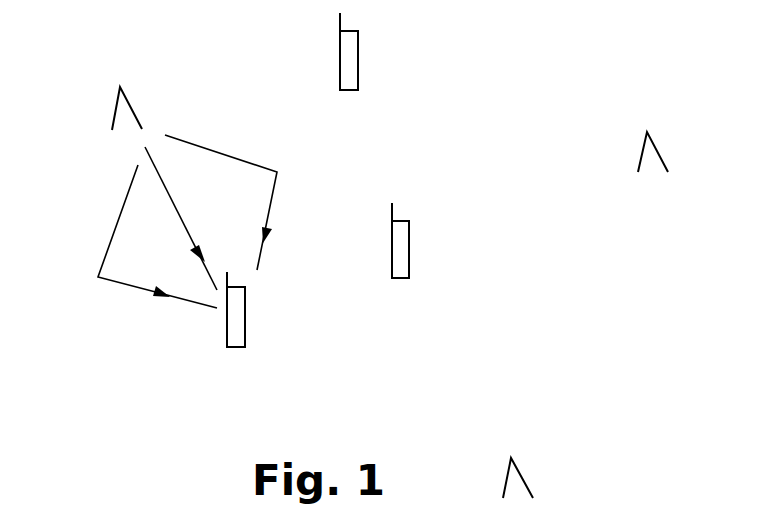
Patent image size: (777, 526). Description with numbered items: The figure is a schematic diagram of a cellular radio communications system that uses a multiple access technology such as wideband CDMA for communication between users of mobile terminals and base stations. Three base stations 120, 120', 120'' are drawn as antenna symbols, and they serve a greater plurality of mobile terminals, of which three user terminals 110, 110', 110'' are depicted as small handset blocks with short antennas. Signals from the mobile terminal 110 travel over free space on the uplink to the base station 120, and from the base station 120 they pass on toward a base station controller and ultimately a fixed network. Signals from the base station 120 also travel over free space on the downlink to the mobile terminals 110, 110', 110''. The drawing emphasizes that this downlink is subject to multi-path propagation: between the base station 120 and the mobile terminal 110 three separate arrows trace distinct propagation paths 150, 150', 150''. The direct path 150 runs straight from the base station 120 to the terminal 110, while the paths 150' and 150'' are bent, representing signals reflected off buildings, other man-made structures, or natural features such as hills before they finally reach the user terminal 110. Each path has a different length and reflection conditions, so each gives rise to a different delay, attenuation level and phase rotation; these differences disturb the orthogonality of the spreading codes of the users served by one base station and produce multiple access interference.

The user terminal 110 is at (282, 309).
The mobile terminal 110' is at (450, 240).
The mobile terminal 110'' is at (400, 51).
The base station 120 is at (87, 90).
The base station 120' is at (556, 460).
The base station 120'' is at (693, 134).
The propagation path 150 is at (181, 218).
The propagation path 150' is at (157, 246).
The propagation path 150'' is at (244, 202).